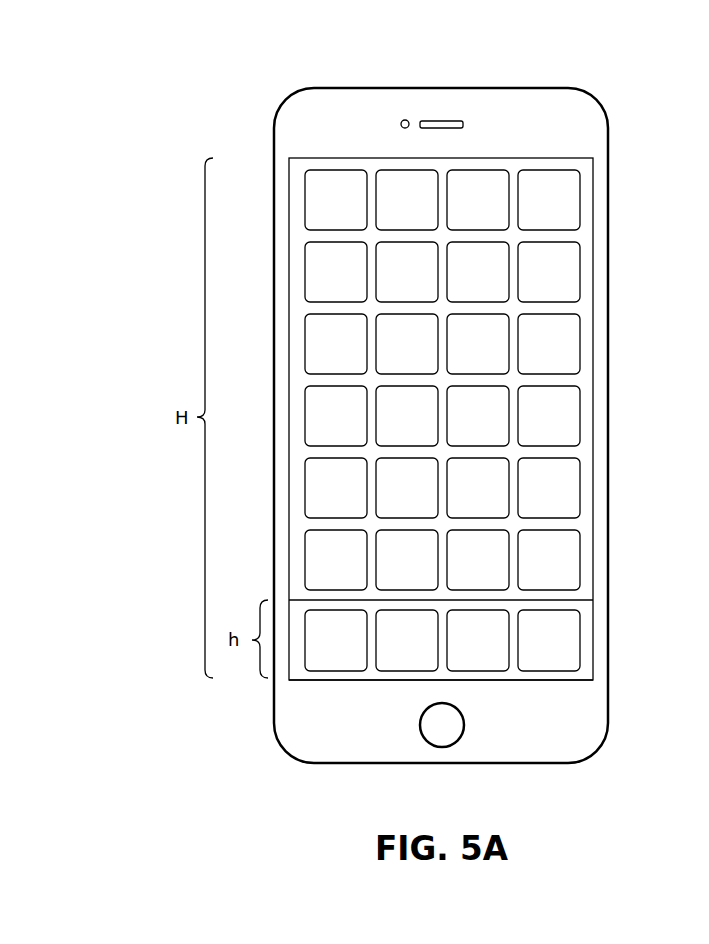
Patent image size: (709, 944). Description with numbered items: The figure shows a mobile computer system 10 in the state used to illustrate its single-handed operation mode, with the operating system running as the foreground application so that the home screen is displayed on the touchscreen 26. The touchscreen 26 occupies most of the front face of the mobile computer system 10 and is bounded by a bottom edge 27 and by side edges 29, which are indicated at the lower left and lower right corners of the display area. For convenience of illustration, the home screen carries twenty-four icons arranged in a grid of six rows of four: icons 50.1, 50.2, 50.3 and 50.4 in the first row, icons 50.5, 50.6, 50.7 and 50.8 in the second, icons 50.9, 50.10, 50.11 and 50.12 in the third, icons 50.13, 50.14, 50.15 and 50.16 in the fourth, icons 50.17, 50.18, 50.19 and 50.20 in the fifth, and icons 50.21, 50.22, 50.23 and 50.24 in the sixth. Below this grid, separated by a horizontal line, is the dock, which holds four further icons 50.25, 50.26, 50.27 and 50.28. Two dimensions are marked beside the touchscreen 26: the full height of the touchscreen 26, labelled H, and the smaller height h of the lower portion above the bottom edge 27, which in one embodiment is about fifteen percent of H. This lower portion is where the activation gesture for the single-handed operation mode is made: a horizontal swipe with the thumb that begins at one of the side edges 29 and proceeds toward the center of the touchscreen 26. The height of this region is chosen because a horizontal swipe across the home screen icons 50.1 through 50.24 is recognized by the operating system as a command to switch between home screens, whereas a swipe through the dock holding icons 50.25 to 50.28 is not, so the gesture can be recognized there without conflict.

The mobile computer system 10 is at (633, 88).
The touchscreen 26 is at (593, 158).
The bottom edge 27 is at (467, 679).
The side edges 29 is at (289, 680).
The icon 50.1 is at (318, 210).
The icon 50.2 is at (389, 210).
The icon 50.3 is at (460, 210).
The icon 50.4 is at (531, 210).
The icon 50.5 is at (318, 282).
The icon 50.6 is at (389, 282).
The icon 50.7 is at (460, 282).
The icon 50.8 is at (531, 282).
The icon 50.9 is at (318, 354).
The icon 50.10 is at (384, 354).
The icon 50.11 is at (455, 354).
The icon 50.12 is at (526, 354).
The icon 50.13 is at (313, 426).
The icon 50.14 is at (384, 426).
The icon 50.15 is at (455, 426).
The icon 50.16 is at (526, 426).
The icon 50.17 is at (313, 498).
The icon 50.18 is at (384, 498).
The icon 50.19 is at (455, 498).
The icon 50.20 is at (526, 498).
The icon 50.21 is at (313, 570).
The icon 50.22 is at (384, 570).
The icon 50.23 is at (455, 570).
The icon 50.24 is at (526, 570).
The icon 50.25 is at (313, 650).
The icon 50.26 is at (384, 650).
The icon 50.27 is at (455, 650).
The icon 50.28 is at (526, 650).